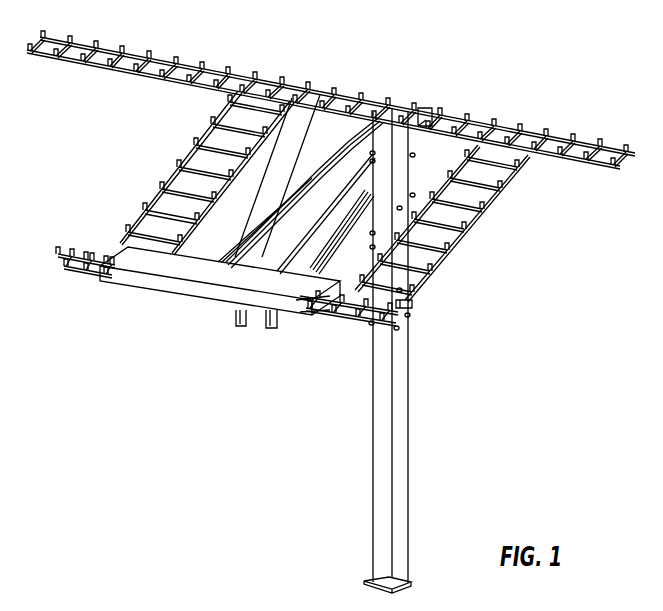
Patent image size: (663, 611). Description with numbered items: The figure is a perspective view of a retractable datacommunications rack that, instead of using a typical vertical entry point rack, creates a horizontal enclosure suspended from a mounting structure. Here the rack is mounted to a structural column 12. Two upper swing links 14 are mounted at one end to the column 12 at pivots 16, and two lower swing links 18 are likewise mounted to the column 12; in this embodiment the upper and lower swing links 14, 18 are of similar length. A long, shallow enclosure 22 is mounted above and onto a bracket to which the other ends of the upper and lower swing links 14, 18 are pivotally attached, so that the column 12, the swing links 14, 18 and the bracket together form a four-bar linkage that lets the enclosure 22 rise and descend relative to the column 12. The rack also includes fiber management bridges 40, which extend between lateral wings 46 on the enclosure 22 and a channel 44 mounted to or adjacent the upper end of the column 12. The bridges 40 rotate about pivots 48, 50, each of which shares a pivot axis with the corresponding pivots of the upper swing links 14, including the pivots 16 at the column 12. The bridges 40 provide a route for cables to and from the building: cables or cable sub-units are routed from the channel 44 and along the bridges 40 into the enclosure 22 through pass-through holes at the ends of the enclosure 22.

The structural column 12 is at (402, 458).
The upper swing links 14 is at (384, 153).
The pivots 16 is at (426, 108).
The lower swing links 18 is at (345, 300).
The enclosure 22 is at (153, 275).
The fiber management bridges 40 is at (180, 162).
The channel 44 is at (588, 132).
The lateral wings 46 is at (70, 262).
The pivots 48 is at (517, 140).
The pivots 50 is at (400, 305).